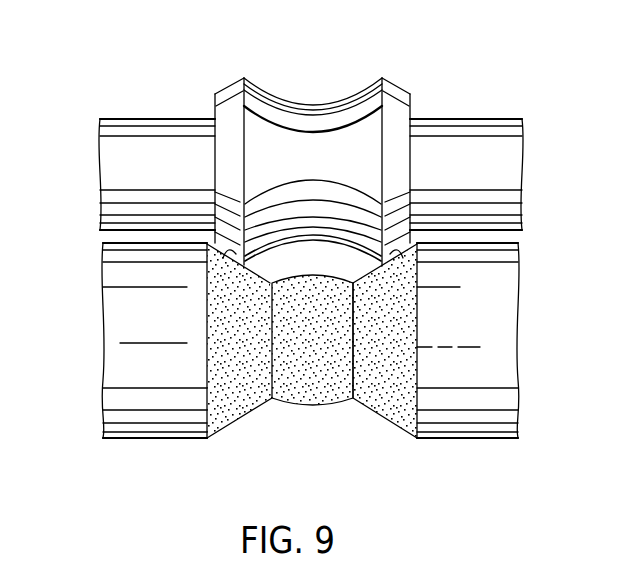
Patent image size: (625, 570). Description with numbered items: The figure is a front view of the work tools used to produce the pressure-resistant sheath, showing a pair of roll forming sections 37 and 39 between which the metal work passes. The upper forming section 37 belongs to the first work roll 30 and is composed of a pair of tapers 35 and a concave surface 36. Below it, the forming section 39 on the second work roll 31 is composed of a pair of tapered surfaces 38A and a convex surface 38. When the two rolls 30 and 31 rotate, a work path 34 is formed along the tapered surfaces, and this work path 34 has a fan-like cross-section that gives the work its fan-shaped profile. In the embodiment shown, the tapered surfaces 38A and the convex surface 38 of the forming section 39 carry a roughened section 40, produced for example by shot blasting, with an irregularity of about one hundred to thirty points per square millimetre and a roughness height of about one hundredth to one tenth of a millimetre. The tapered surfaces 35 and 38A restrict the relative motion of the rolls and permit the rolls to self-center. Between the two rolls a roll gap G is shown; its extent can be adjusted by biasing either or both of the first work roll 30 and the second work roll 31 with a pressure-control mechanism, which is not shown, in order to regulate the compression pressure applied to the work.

The first work roll 30 is at (502, 152).
The second work roll 31 is at (507, 278).
The work path 34 is at (272, 283).
The tapers 35 is at (228, 137).
The concave surface 36 is at (307, 127).
The roll forming section 37 is at (357, 73).
The convex surface 38 is at (312, 278).
The tapered surfaces 38A is at (273, 267).
The roll forming section 39 is at (390, 428).
The roughened section 40 is at (290, 386).
The roll gap G is at (510, 235).